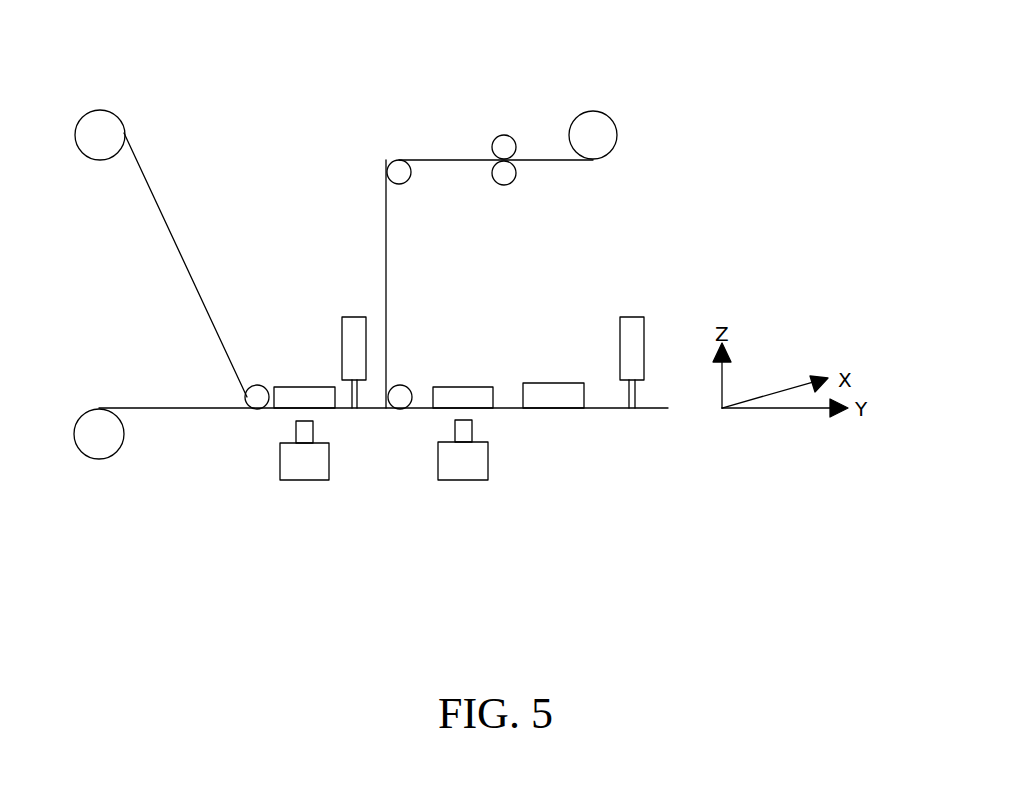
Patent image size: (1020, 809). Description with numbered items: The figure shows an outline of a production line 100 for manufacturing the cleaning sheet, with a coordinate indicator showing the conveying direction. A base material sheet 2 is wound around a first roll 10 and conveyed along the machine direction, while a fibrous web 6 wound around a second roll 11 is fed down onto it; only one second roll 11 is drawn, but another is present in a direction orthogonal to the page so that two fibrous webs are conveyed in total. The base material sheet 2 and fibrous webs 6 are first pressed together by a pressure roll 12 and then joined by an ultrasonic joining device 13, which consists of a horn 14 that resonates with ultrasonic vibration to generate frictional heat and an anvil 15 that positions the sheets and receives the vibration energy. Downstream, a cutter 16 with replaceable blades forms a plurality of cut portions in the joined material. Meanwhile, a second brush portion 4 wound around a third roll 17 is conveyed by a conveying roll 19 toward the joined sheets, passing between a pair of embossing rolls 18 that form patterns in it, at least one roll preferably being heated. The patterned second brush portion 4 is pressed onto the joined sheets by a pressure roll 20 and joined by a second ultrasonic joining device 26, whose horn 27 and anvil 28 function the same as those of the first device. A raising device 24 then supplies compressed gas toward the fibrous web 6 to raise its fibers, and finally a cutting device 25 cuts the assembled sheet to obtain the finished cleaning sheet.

The production line 100 is at (750, 76).
The base material sheet 2 is at (136, 406).
The first roll 10 is at (90, 446).
The second roll 11 is at (110, 118).
The fibrous web 6 is at (172, 233).
The pressure roll 12 is at (256, 386).
The ultrasonic joining device 13 is at (195, 438).
The anvil 15 is at (286, 400).
The horn 14 is at (284, 466).
The cutter 16 is at (352, 320).
The second brush portion 4 is at (434, 160).
The conveying roll 19 is at (390, 166).
The embossing rolls 18 is at (504, 178).
The third roll 17 is at (605, 125).
The pressure roll 20 is at (406, 388).
The ultrasonic joining device 26 is at (382, 443).
The anvil 28 is at (452, 400).
The horn 27 is at (450, 465).
The raising device 24 is at (545, 383).
The cutting device 25 is at (632, 320).